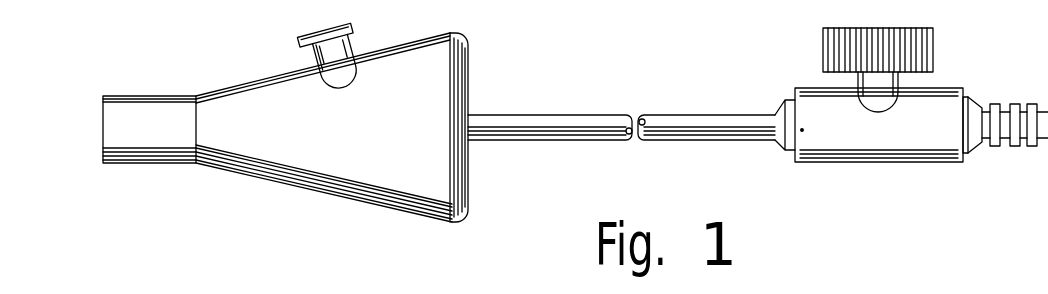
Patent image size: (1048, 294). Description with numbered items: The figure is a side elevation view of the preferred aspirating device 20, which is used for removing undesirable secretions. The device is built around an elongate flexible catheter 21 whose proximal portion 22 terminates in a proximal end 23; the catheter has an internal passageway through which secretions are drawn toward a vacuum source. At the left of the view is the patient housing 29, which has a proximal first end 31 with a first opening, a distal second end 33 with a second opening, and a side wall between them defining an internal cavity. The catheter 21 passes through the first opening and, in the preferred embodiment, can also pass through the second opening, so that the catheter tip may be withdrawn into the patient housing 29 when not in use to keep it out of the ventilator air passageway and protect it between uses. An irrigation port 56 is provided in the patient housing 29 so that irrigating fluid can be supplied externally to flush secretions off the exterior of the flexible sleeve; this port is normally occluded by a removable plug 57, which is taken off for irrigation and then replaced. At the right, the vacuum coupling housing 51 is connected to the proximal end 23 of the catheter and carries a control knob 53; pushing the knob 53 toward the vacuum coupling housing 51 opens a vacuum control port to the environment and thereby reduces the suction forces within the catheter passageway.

The aspirating device 20 is at (586, 64).
The elongate flexible catheter 21 is at (570, 141).
The proximal portion 22 is at (650, 141).
The proximal end 23 is at (775, 146).
The patient housing 29 is at (349, 201).
The proximal first end 31 is at (454, 223).
The distal second end 33 is at (180, 163).
The vacuum coupling housing 51 is at (890, 132).
The control knob 53 is at (923, 50).
The irrigation port 56 is at (350, 50).
The removable plug 57 is at (313, 33).